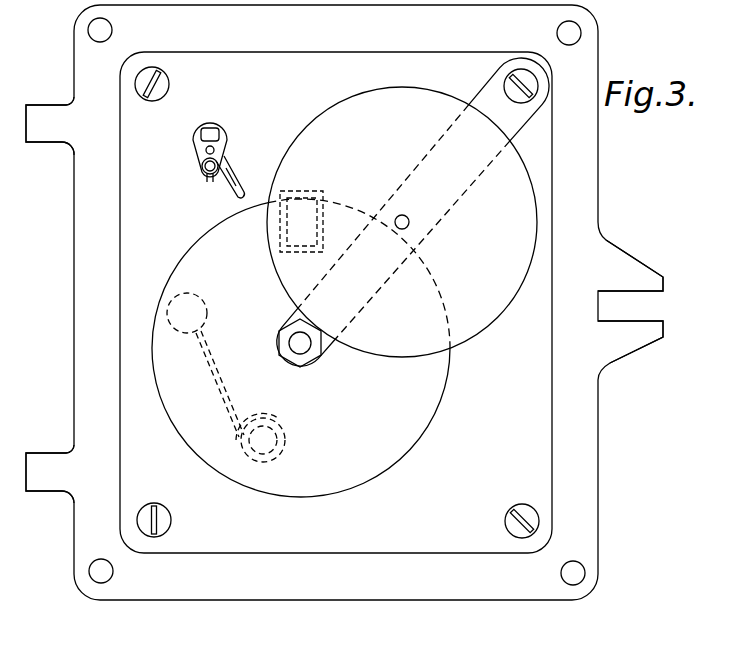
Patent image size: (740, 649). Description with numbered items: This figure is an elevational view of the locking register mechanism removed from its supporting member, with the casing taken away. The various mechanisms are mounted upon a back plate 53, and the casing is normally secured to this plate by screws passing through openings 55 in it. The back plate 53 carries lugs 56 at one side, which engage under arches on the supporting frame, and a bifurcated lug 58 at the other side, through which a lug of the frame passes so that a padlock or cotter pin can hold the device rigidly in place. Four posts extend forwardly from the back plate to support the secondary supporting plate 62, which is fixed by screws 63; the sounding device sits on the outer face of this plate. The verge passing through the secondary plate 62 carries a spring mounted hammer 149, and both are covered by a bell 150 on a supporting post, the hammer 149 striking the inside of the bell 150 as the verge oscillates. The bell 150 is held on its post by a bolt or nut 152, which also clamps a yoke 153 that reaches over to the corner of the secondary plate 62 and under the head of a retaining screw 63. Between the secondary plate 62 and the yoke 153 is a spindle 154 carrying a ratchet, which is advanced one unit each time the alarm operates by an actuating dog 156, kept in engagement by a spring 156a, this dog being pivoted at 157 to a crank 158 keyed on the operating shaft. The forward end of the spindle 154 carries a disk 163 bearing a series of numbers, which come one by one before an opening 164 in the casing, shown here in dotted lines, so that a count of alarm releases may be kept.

The back plate 53 is at (592, 497).
The openings 55 is at (99, 30).
The lugs 56 is at (42, 128).
The bifurcated lug 58 is at (619, 344).
The secondary supporting plate 62 is at (538, 418).
The screws 63 is at (147, 521).
The hammer 149 is at (176, 316).
The bell 150 is at (178, 401).
The bolt or nut 152 is at (303, 358).
The yoke 153 is at (490, 110).
The spindle 154 is at (408, 228).
The actuating dog 156 is at (250, 190).
The spring 156a is at (226, 181).
The pivot 157 is at (204, 171).
The crank 158 is at (221, 148).
The disk 163 is at (325, 128).
The opening 164 is at (281, 232).